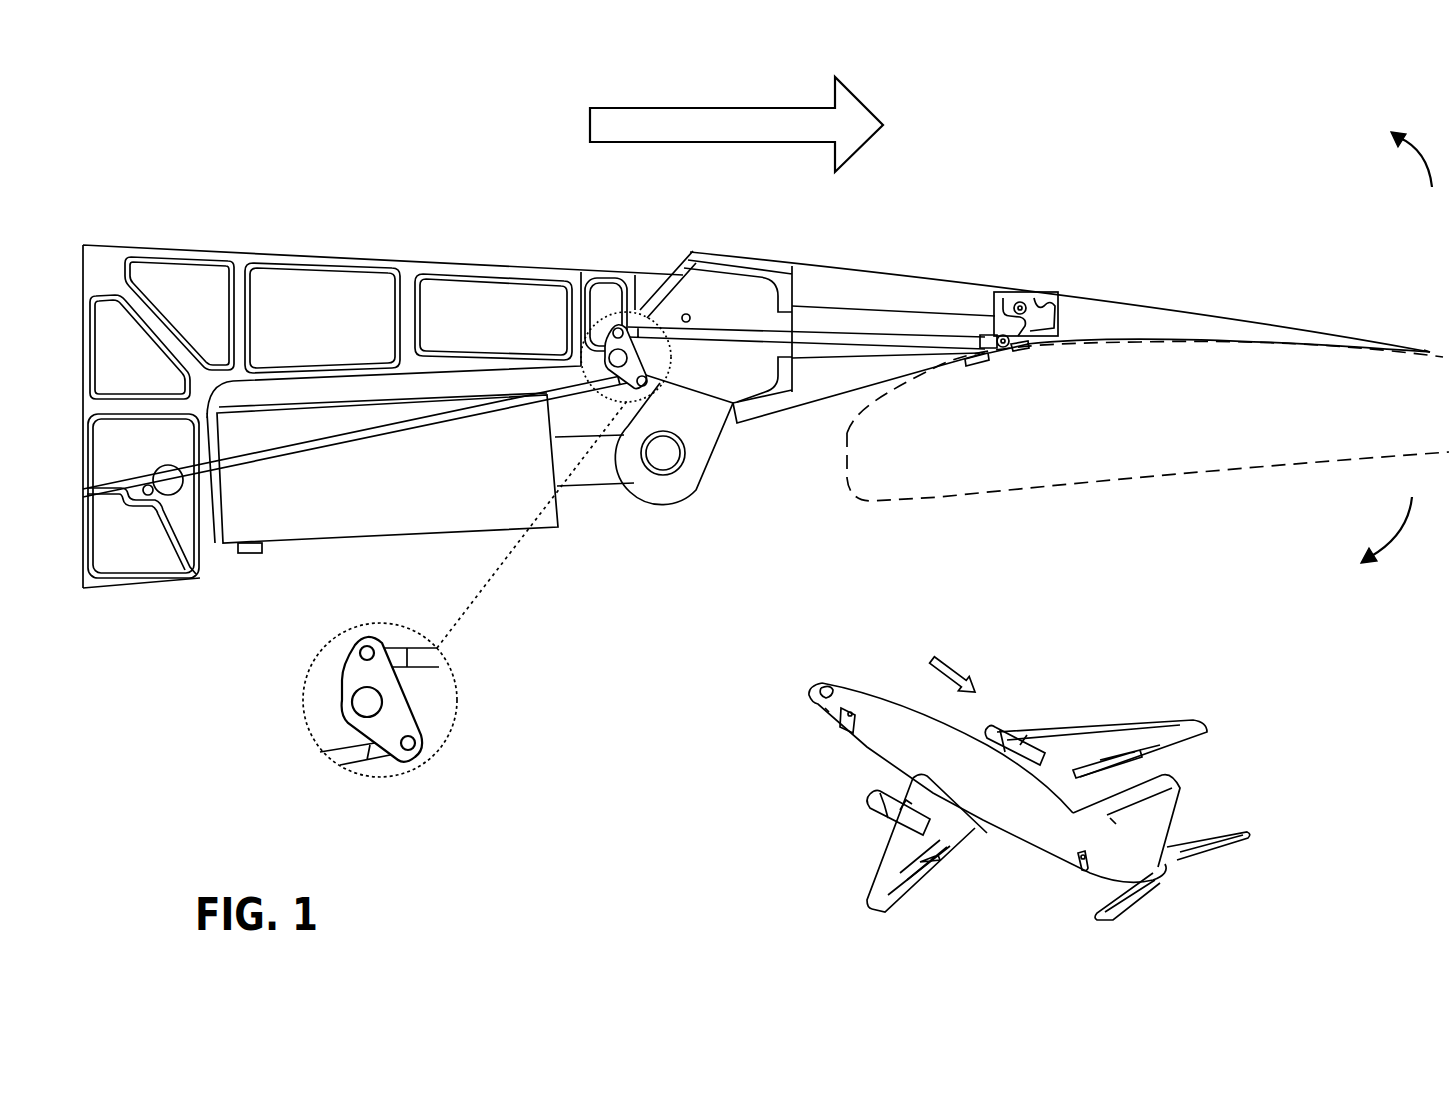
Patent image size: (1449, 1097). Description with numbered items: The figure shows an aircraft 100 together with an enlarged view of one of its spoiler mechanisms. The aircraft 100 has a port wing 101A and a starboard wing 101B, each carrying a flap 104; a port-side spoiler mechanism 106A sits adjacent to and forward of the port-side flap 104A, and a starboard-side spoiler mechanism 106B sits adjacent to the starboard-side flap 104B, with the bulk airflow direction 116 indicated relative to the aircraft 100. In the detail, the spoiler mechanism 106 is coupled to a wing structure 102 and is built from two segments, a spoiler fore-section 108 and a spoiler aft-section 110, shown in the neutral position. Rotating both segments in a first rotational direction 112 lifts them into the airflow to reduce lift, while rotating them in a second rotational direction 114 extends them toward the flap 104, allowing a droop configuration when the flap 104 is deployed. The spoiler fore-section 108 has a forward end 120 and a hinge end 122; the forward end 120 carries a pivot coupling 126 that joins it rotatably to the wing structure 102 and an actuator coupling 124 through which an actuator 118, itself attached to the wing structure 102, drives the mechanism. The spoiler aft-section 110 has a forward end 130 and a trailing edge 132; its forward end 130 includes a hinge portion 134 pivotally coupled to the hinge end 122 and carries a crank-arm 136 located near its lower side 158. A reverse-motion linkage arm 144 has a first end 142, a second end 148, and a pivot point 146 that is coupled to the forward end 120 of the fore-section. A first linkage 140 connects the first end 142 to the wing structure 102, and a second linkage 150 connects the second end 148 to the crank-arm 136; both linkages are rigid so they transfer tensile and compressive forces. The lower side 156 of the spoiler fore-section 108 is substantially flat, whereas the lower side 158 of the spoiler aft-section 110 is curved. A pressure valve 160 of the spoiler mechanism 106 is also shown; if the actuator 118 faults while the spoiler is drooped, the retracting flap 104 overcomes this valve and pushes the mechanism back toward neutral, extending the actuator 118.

The aircraft 100 is at (778, 738).
The port wing 101A is at (897, 825).
The starboard wing 101B is at (1152, 738).
The wing structure 102 is at (684, 252).
The flap 104 is at (1180, 476).
The port-side flap 104A is at (910, 890).
The starboard-side flap 104B is at (1175, 742).
The spoiler mechanism 106 is at (988, 170).
The port-side spoiler mechanism 106A is at (905, 855).
The starboard-side spoiler mechanism 106B is at (1100, 758).
The spoiler fore-section 108 is at (1052, 270).
The spoiler aft-section 110 is at (1433, 288).
The first rotational direction 112 is at (1337, 138).
The second rotational direction 114 is at (1342, 562).
The bulk airflow direction 116 is at (590, 128).
The actuator 118 is at (385, 540).
The forward end 120 is at (768, 445).
The hinge end 122 is at (986, 380).
The actuator coupling 124 is at (681, 495).
The pivot coupling 126 is at (687, 314).
The forward end 130 is at (1021, 380).
The trailing edge 132 is at (1407, 372).
The hinge portion 134 is at (1020, 305).
The crank-arm 136 is at (1018, 350).
The first linkage 140 is at (268, 470).
The first end 142 is at (414, 752).
The reverse-motion linkage arm 144 is at (348, 680).
The pivot point 146 is at (364, 705).
The second end 148 is at (358, 648).
The second linkage 150 is at (697, 340).
The lower side 156 is at (842, 410).
The lower side 158 is at (1189, 353).
The pressure valve 160 is at (251, 553).